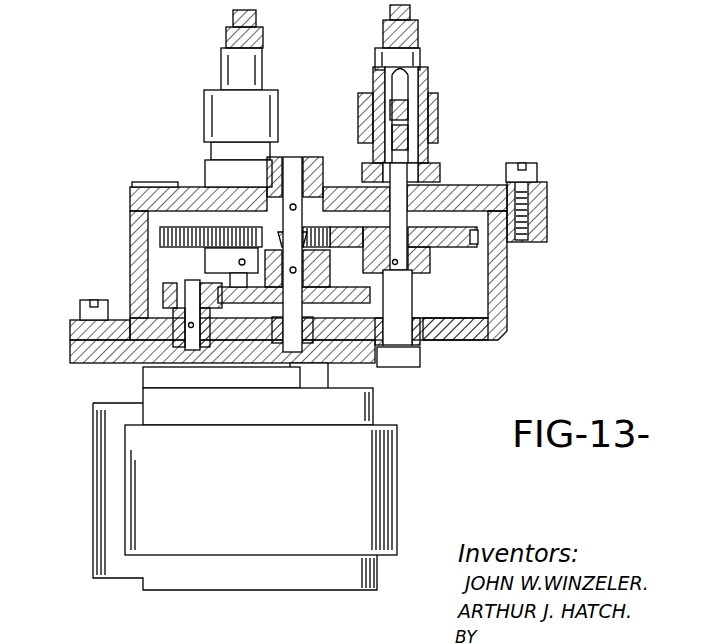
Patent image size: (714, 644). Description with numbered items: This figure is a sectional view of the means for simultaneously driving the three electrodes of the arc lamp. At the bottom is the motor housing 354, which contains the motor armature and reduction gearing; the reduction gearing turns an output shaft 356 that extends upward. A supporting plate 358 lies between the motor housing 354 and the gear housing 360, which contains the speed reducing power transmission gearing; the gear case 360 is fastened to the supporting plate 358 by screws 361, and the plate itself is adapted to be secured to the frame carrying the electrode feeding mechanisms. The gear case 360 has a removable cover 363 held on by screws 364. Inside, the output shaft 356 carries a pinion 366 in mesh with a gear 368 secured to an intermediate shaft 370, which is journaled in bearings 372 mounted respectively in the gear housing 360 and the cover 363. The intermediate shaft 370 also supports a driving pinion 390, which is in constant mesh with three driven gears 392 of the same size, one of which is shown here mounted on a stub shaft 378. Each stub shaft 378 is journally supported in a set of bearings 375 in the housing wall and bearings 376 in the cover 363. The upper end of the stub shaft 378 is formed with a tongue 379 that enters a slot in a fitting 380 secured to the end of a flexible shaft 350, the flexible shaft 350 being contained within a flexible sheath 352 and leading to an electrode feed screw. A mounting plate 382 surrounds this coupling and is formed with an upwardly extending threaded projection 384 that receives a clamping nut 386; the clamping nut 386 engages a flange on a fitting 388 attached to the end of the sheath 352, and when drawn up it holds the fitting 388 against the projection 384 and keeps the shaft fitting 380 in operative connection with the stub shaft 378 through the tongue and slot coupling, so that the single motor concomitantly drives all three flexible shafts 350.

The flexible shaft 350 is at (232, 17).
The flexible sheath 352 is at (230, 42).
The motor housing 354 is at (397, 440).
The output shaft 356 is at (190, 282).
The supporting plate 358 is at (70, 355).
The gear housing 360 is at (500, 300).
The screw 361 is at (80, 307).
The cover 363 is at (478, 183).
The screw 364 is at (537, 170).
The pinion 366 is at (163, 297).
The gear 368 is at (372, 296).
The intermediate shaft 370 is at (297, 278).
The bearing 372 is at (323, 157).
The bearing 375 is at (430, 340).
The bearing 376 is at (437, 180).
The stub shaft 378 is at (432, 262).
The tongue 379 is at (435, 122).
The fitting 380 is at (435, 102).
The mounting plate 382 is at (190, 185).
The threaded projection 384 is at (363, 103).
The clamping nut 386 is at (204, 105).
The fitting 388 is at (420, 48).
The pinion 390 is at (317, 228).
The gear 392 is at (160, 233).